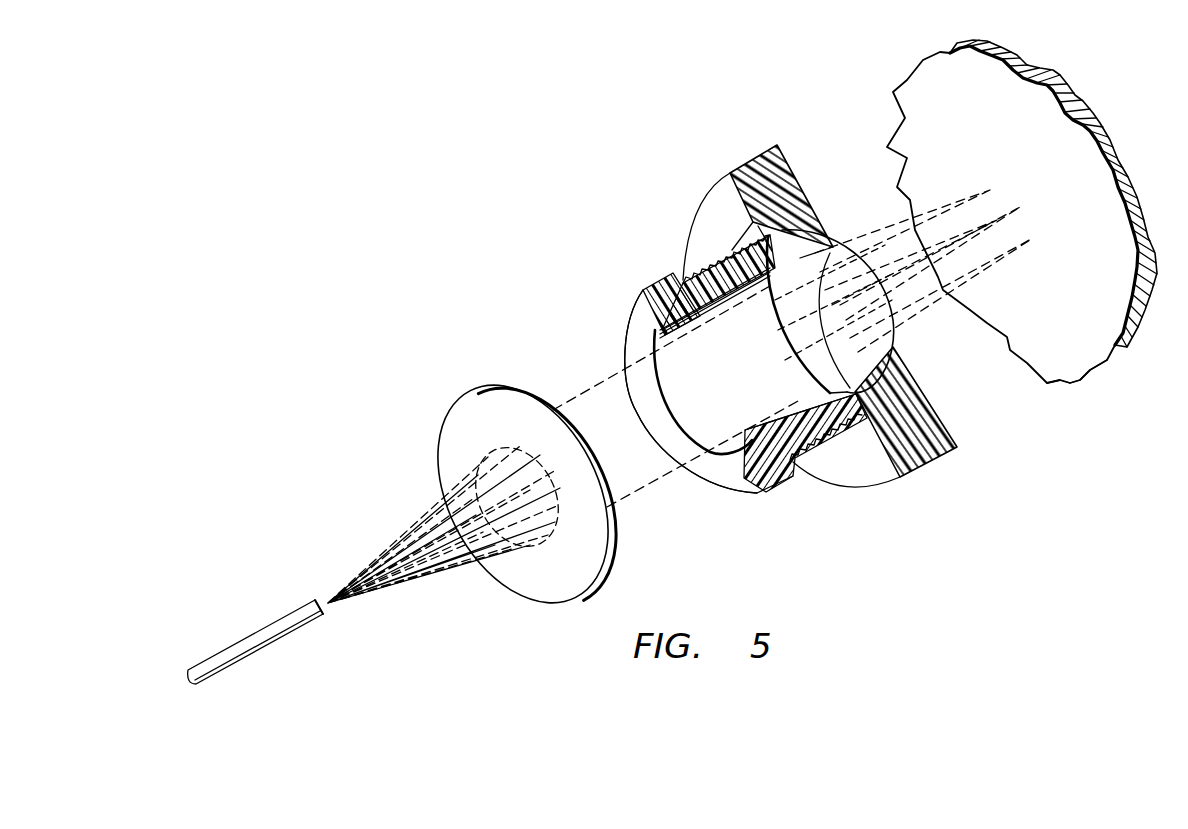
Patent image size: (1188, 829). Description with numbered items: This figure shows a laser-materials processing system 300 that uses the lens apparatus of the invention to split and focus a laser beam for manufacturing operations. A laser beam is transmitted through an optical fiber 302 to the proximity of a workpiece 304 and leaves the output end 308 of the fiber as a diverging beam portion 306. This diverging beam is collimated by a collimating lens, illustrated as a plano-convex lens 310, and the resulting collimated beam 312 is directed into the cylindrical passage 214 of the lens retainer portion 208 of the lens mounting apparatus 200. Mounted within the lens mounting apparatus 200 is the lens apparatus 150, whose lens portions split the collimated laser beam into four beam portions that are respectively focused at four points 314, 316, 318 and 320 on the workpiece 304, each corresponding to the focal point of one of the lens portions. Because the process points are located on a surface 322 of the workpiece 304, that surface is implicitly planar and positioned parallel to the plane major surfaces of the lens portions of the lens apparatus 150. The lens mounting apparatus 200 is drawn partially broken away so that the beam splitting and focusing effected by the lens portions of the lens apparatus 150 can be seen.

The lens apparatus 150 is at (903, 332).
The lens mounting apparatus 200 is at (862, 492).
The lens retainer portion 208 is at (743, 490).
The cylindrical passage 214 is at (657, 357).
The laser-materials processing system 300 is at (650, 210).
The optical fiber 302 is at (290, 630).
The workpiece 304 is at (893, 102).
The diverging beam portion 306 is at (392, 530).
The output end 308 is at (325, 590).
The plano-convex lens 310 is at (540, 582).
The collimated beam 312 is at (587, 395).
The point 314 is at (997, 222).
The point 316 is at (990, 192).
The point 318 is at (1020, 207).
The point 320 is at (1033, 238).
The surface 322 is at (1073, 362).